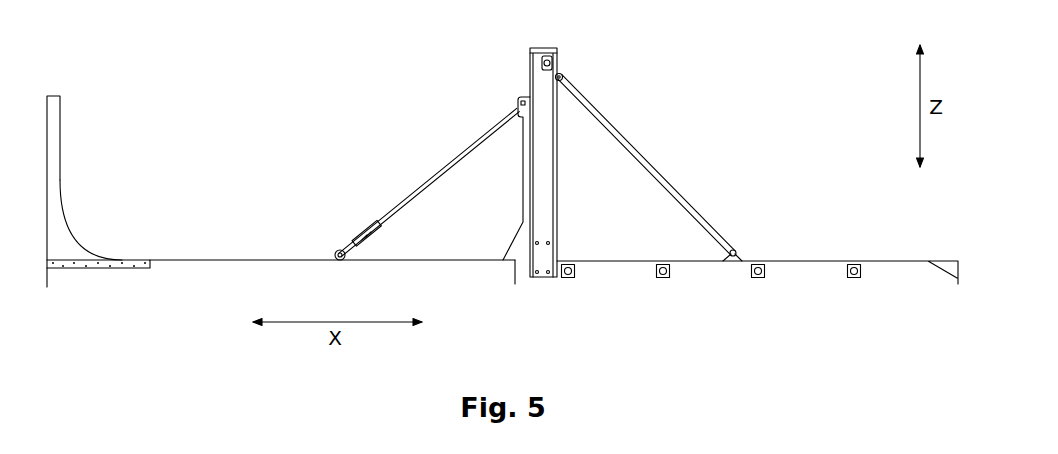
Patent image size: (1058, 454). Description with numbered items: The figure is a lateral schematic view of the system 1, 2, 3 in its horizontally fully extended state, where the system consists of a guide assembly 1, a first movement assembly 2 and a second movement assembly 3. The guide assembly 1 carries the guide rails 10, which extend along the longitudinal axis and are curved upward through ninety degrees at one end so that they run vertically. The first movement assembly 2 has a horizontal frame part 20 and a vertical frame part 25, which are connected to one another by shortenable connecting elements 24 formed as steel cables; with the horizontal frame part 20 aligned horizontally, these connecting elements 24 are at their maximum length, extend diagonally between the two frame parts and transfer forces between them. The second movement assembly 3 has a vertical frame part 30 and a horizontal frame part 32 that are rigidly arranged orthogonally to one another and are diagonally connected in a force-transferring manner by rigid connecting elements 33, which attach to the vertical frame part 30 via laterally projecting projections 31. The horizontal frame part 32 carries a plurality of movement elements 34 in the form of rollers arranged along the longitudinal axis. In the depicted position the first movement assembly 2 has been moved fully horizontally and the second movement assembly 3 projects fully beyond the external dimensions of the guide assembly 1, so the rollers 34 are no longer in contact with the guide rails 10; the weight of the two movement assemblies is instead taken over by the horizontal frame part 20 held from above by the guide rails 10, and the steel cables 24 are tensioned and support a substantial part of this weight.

The guide assembly 1 is at (88, 113).
The first movement assembly 2 is at (468, 113).
The second movement assembly 3 is at (768, 213).
The guide rails 10 is at (235, 268).
The horizontal frame part 20 is at (337, 253).
The shortenable connecting elements 24 is at (395, 210).
The vertical frame part 25 is at (543, 83).
The vertical frame part 30 is at (543, 278).
The projections 31 is at (562, 73).
The horizontal frame part 32 is at (812, 268).
The connecting elements 33 is at (638, 152).
The movement elements 34 is at (665, 278).